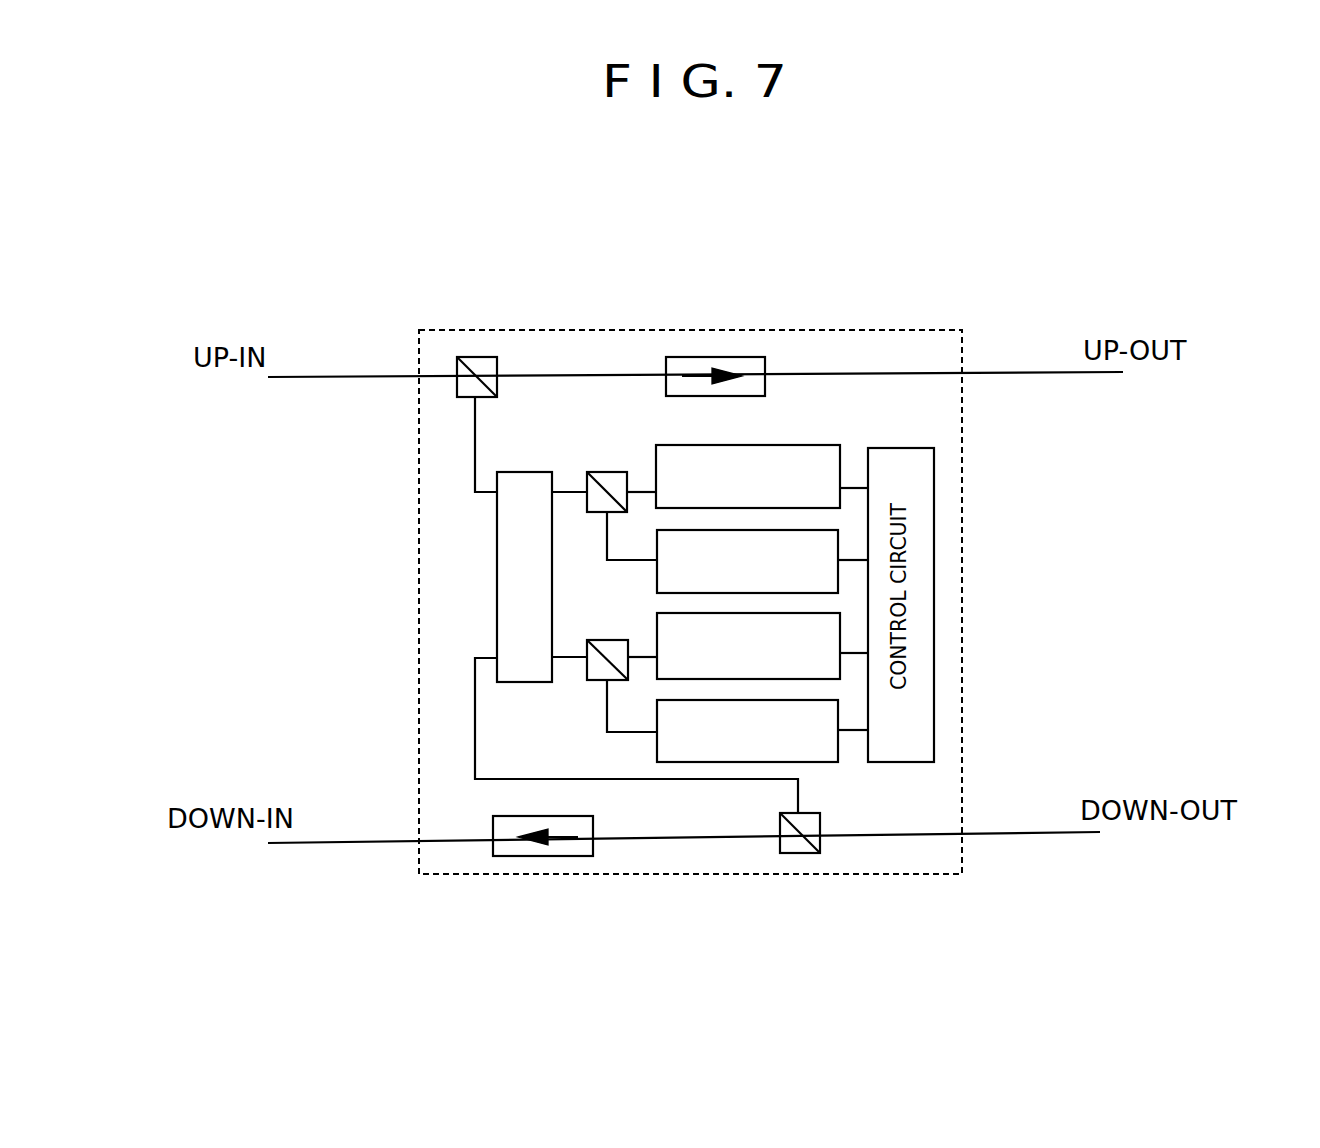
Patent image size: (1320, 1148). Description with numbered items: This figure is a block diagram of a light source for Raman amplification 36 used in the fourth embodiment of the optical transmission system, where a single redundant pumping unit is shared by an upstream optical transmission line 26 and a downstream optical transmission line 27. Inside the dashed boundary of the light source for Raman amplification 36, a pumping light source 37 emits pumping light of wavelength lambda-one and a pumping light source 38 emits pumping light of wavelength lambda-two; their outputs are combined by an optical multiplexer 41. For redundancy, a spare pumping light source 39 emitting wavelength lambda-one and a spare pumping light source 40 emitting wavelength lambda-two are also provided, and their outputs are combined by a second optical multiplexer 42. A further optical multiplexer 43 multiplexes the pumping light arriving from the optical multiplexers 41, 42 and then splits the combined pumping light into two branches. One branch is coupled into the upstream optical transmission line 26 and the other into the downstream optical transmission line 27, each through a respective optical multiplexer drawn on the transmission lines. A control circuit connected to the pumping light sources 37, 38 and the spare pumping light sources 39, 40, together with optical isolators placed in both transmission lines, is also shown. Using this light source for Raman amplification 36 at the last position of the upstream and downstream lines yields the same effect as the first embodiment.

The upstream optical transmission line 26 is at (355, 377).
The downstream optical transmission line 27 is at (1047, 832).
The light source for Raman amplification 36 is at (908, 330).
The pumping light source 37 is at (763, 445).
The pumping light source 38 is at (842, 542).
The spare pumping light source 39 is at (842, 668).
The spare pumping light source 40 is at (657, 748).
The optical multiplexer 41 is at (606, 472).
The optical multiplexer 42 is at (605, 640).
The optical multiplexer 43 is at (496, 575).